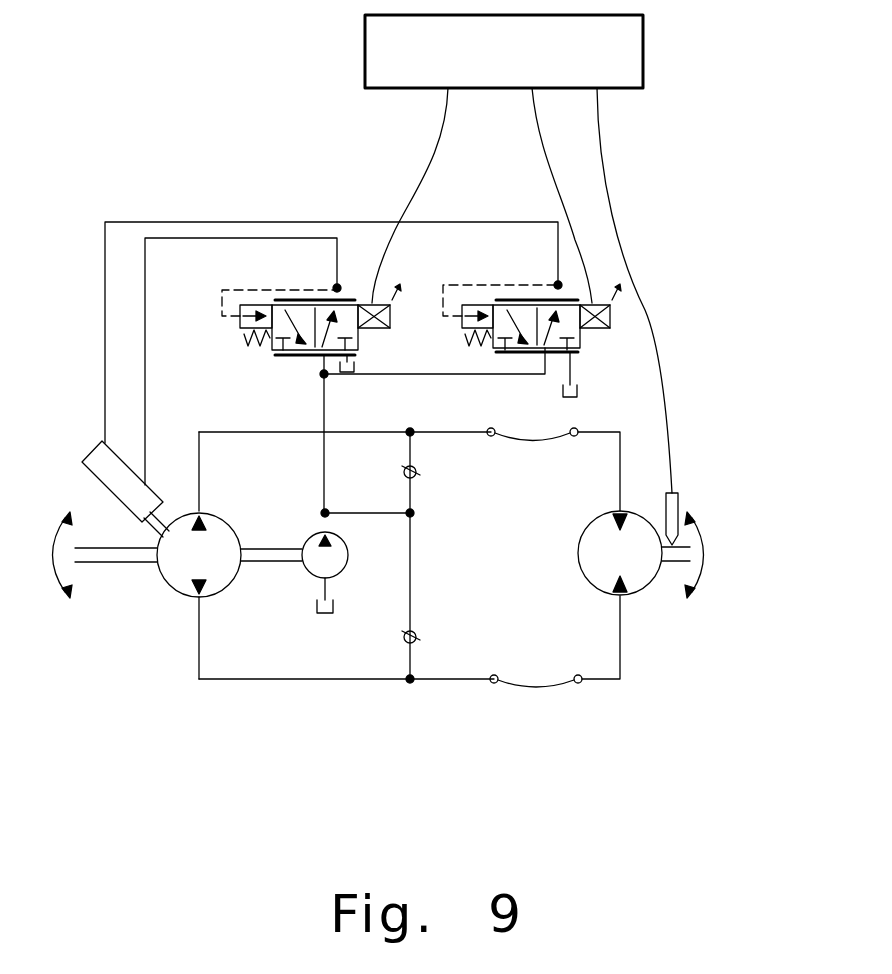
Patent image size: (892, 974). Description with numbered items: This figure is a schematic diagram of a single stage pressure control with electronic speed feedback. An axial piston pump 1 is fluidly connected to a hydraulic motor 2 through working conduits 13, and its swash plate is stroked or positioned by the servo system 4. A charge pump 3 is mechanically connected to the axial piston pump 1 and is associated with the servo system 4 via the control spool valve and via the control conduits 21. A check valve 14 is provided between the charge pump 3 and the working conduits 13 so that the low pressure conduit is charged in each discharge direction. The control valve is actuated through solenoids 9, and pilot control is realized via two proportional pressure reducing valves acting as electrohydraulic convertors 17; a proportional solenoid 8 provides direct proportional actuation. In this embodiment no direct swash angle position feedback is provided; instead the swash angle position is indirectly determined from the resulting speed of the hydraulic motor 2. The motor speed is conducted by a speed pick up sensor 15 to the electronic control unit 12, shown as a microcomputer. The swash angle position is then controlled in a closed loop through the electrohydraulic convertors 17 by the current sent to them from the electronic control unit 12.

The electronic control unit 12 is at (372, 75).
The control conduits 21 is at (177, 240).
The electrohydraulic convertors 17 is at (276, 292).
The solenoids 9 is at (242, 316).
The proportional solenoid 8 is at (392, 313).
The check valve 14 is at (418, 475).
The working conduits 13 is at (472, 435).
The axial piston pump 1 is at (187, 563).
The servo system 4 is at (103, 472).
The charge pump 3 is at (313, 563).
The hydraulic motor 2 is at (630, 565).
The speed pick up sensor 15 is at (675, 505).